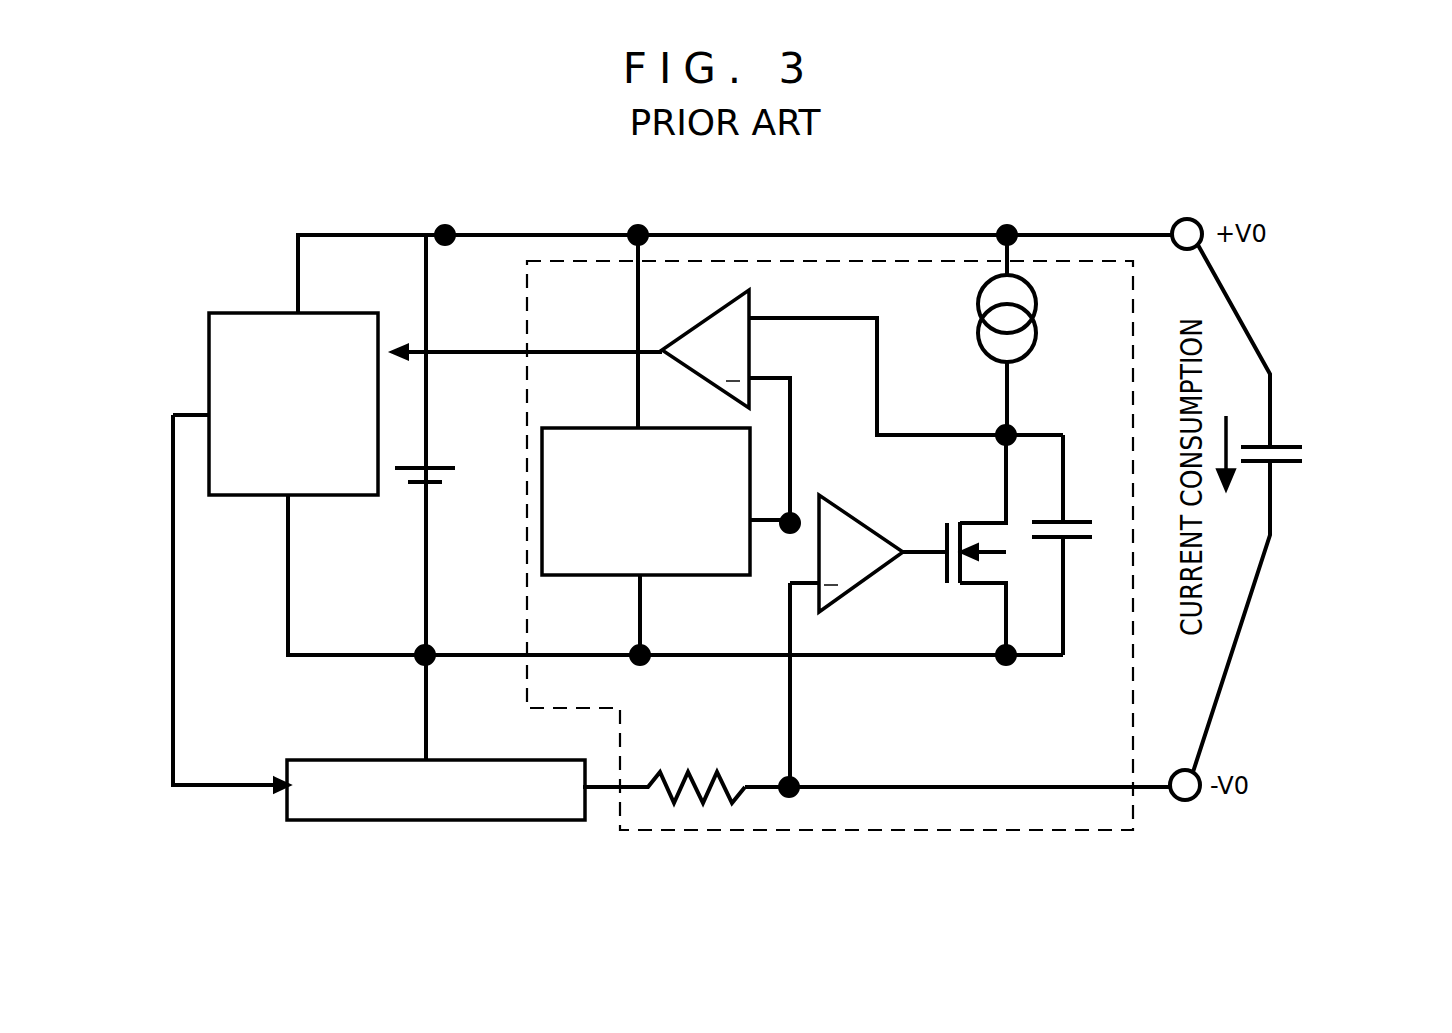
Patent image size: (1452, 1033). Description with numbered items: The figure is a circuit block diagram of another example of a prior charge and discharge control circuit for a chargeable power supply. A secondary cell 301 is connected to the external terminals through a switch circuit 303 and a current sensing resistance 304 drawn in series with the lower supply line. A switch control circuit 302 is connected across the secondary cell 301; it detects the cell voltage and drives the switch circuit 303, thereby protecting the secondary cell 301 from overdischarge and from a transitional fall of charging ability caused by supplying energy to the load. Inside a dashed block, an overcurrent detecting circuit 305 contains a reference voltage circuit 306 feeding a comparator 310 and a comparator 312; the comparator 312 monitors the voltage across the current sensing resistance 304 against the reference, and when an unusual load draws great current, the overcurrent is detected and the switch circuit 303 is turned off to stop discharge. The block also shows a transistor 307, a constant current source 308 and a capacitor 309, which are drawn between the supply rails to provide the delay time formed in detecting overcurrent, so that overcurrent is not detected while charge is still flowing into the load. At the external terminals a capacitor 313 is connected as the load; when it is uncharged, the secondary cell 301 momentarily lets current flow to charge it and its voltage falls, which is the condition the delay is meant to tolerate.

The secondary cell 301 is at (500, 437).
The switch control circuit 302 is at (263, 313).
The switch circuit 303 is at (427, 832).
The resistor 304 is at (732, 772).
The charge control circuit 305 is at (918, 830).
The reference voltage circuit 306 is at (600, 428).
The transistor 307 is at (967, 512).
The constant current source 308 is at (1037, 273).
The capacitor 309 is at (1082, 512).
The comparator 310 is at (708, 312).
The comparator 312 is at (848, 590).
The load capacitor 313 is at (1285, 477).